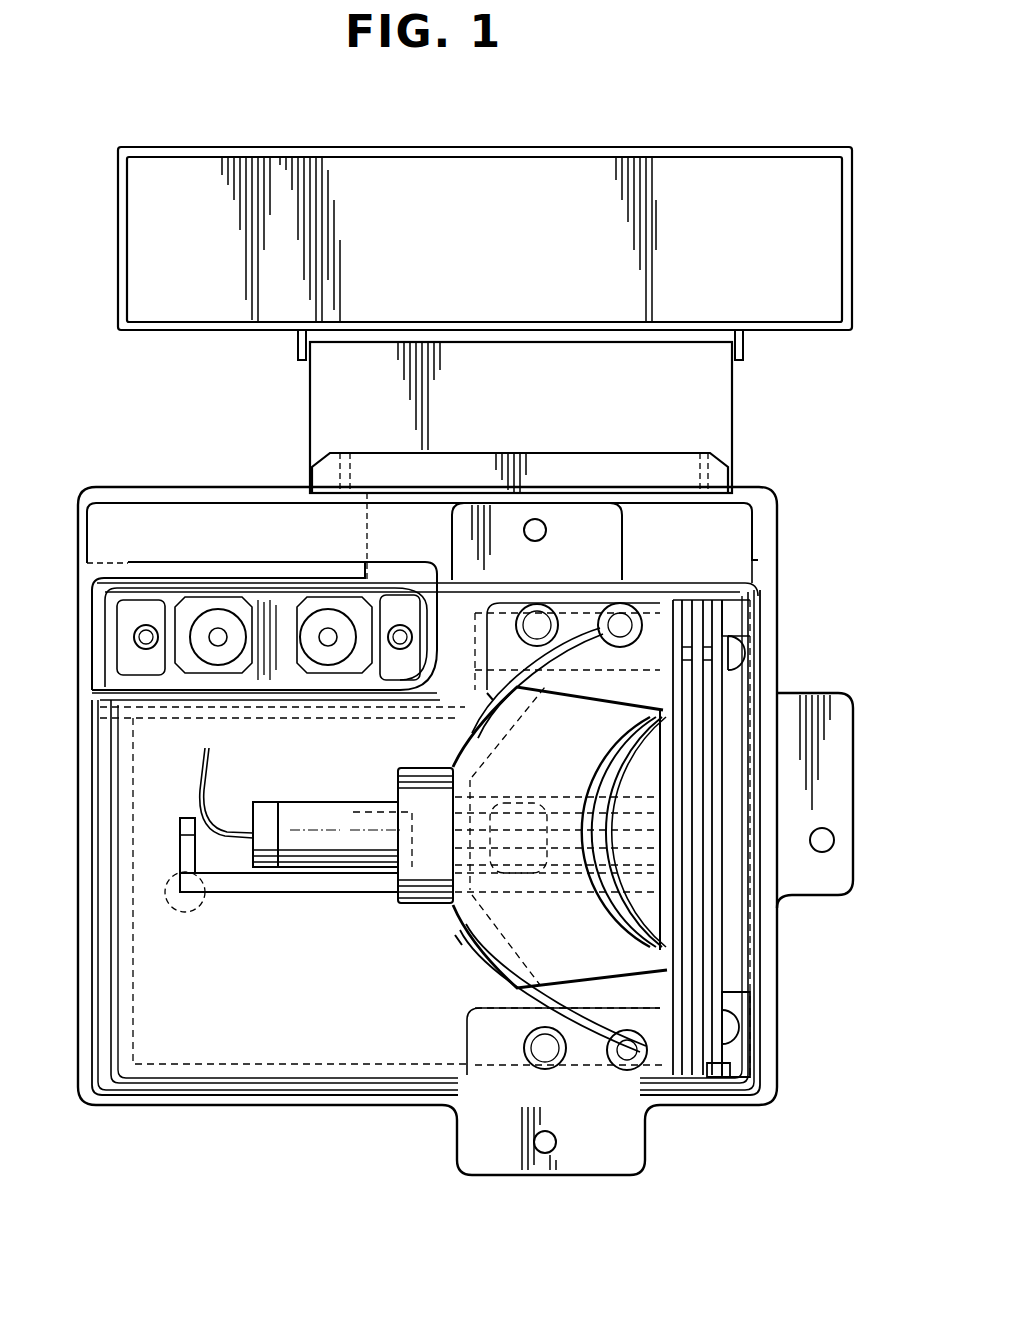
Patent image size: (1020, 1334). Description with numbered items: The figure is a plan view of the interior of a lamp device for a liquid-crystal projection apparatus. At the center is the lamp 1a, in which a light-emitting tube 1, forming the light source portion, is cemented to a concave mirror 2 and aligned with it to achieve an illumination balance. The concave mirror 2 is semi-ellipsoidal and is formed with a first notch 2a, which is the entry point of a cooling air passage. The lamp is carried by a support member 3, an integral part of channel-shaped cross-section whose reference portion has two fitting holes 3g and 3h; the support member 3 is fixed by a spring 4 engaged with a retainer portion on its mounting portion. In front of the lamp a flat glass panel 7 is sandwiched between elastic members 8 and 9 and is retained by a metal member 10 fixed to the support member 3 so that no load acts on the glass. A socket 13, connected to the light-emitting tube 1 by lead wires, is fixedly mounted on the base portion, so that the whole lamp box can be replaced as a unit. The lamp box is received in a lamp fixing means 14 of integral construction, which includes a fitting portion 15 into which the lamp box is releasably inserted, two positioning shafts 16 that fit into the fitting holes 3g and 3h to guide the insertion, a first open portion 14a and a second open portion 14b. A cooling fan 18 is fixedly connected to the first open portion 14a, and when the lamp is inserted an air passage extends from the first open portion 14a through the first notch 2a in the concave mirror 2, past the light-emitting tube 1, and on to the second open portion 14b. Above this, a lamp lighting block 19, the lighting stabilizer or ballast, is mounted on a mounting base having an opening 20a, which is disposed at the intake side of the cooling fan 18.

The light-emitting tube 1 is at (460, 905).
The lamp 1a is at (445, 770).
The concave mirror 2 is at (470, 957).
The first notch 2a is at (655, 770).
The support member 3 is at (825, 880).
The fitting hole 3g is at (605, 1065).
The fitting hole 3h is at (585, 620).
The spring 4 is at (480, 975).
The flat glass panel 7 is at (725, 1005).
The elastic member 8 is at (740, 1090).
The elastic member 9 is at (725, 1042).
The metal member 10 is at (720, 978).
The socket 13 is at (160, 665).
The lamp fixing means 14 is at (125, 1105).
The first open portion 14a is at (378, 493).
The second open portion 14b is at (78, 985).
The fitting portion 15 is at (745, 552).
The positioning shaft 16 is at (540, 600).
The cooling fan 18 is at (715, 405).
The lamp lighting block 19 is at (750, 165).
The opening 20a is at (745, 358).